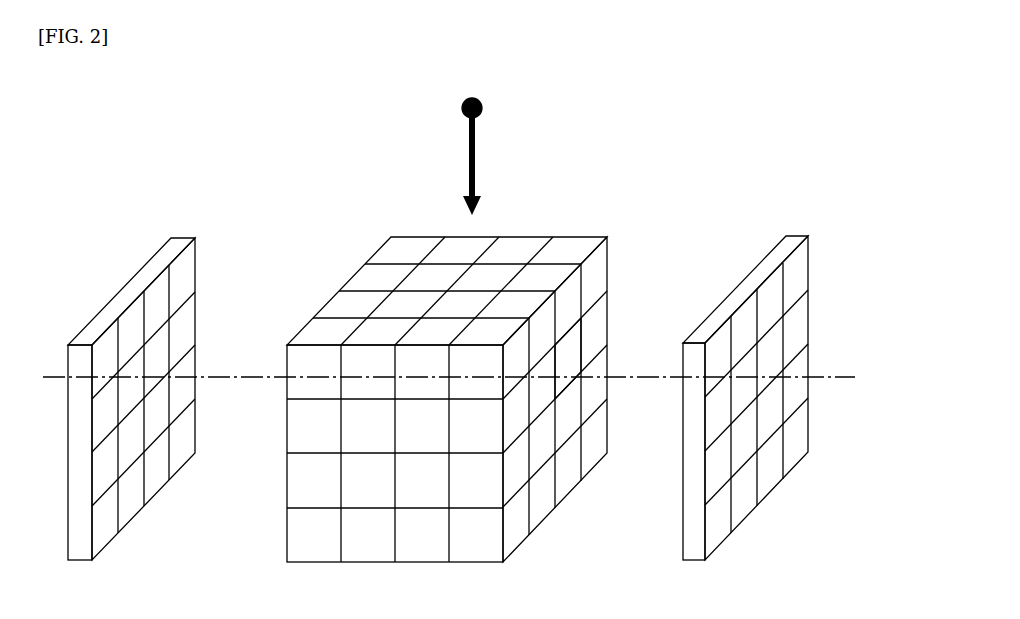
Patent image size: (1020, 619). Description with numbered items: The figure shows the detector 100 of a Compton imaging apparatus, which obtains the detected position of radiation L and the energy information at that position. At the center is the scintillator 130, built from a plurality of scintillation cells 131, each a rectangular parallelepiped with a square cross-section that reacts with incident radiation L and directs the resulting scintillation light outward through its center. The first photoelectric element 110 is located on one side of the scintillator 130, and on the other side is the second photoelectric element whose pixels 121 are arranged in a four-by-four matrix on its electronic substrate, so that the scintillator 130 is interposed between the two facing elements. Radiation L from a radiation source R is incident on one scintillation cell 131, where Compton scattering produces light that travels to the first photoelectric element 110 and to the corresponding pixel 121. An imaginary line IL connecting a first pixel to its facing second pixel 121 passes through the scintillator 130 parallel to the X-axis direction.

The detector 100 is at (170, 93).
The first photoelectric element 110 is at (140, 282).
The pixel 121 is at (770, 352).
The scintillator 130 is at (584, 222).
The scintillation cell 131 is at (568, 362).
The radiation source R is at (462, 100).
The radiation L is at (478, 150).
The imaginary line IL is at (463, 379).